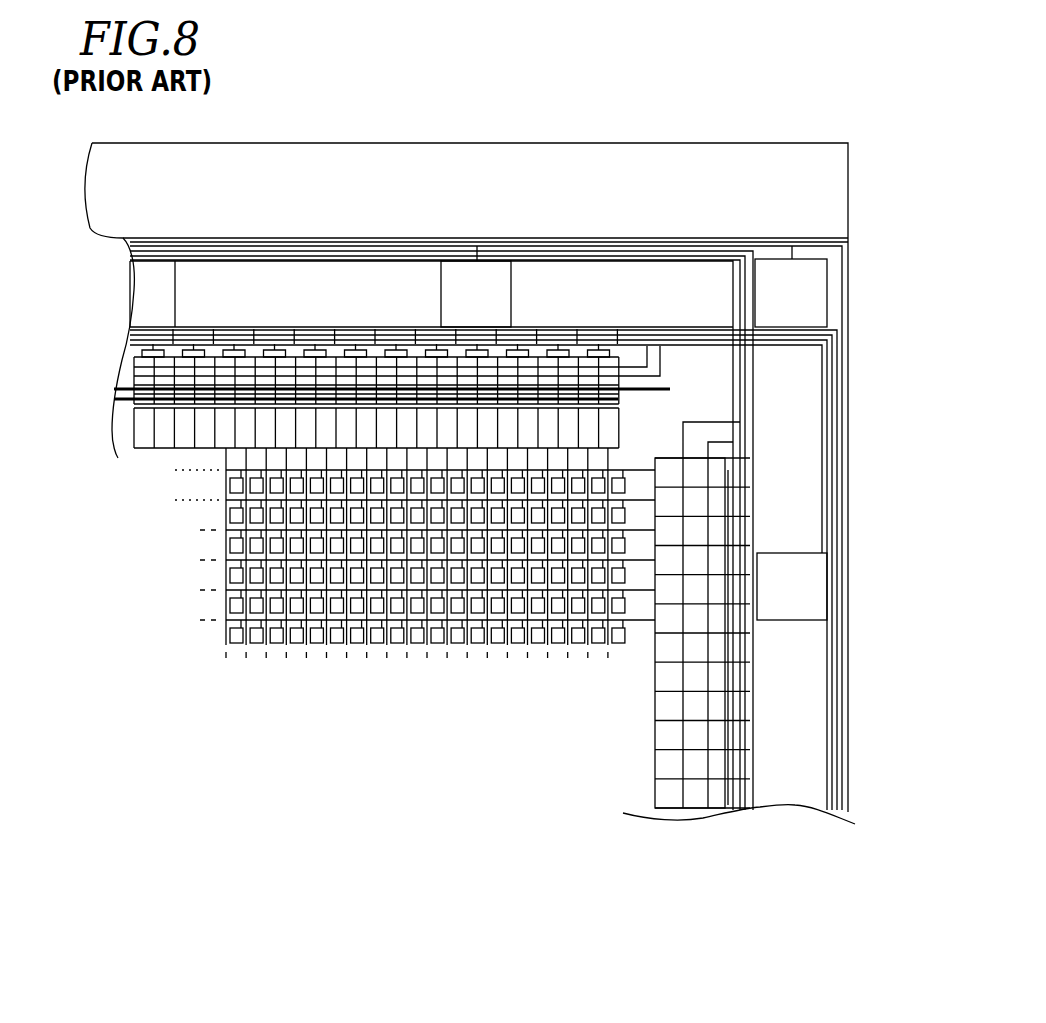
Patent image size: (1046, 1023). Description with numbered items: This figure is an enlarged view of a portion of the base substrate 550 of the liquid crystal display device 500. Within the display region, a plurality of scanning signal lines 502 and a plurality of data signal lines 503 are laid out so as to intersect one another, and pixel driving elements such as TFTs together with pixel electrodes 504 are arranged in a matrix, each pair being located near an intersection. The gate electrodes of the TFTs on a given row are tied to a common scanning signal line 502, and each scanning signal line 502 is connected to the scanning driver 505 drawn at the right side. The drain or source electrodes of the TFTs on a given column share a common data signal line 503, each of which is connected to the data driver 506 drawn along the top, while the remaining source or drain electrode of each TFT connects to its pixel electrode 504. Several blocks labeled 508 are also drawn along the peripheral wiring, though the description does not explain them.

The liquid crystal display device 500 is at (800, 90).
The scanning signal lines 502 is at (379, 604).
The data signal lines 503 is at (348, 658).
The pixel electrodes 504 is at (432, 630).
The scanning driver 505 is at (750, 820).
The data driver 506 is at (105, 327).
The driver chip 508 is at (452, 258).
The base substrate 550 is at (852, 454).